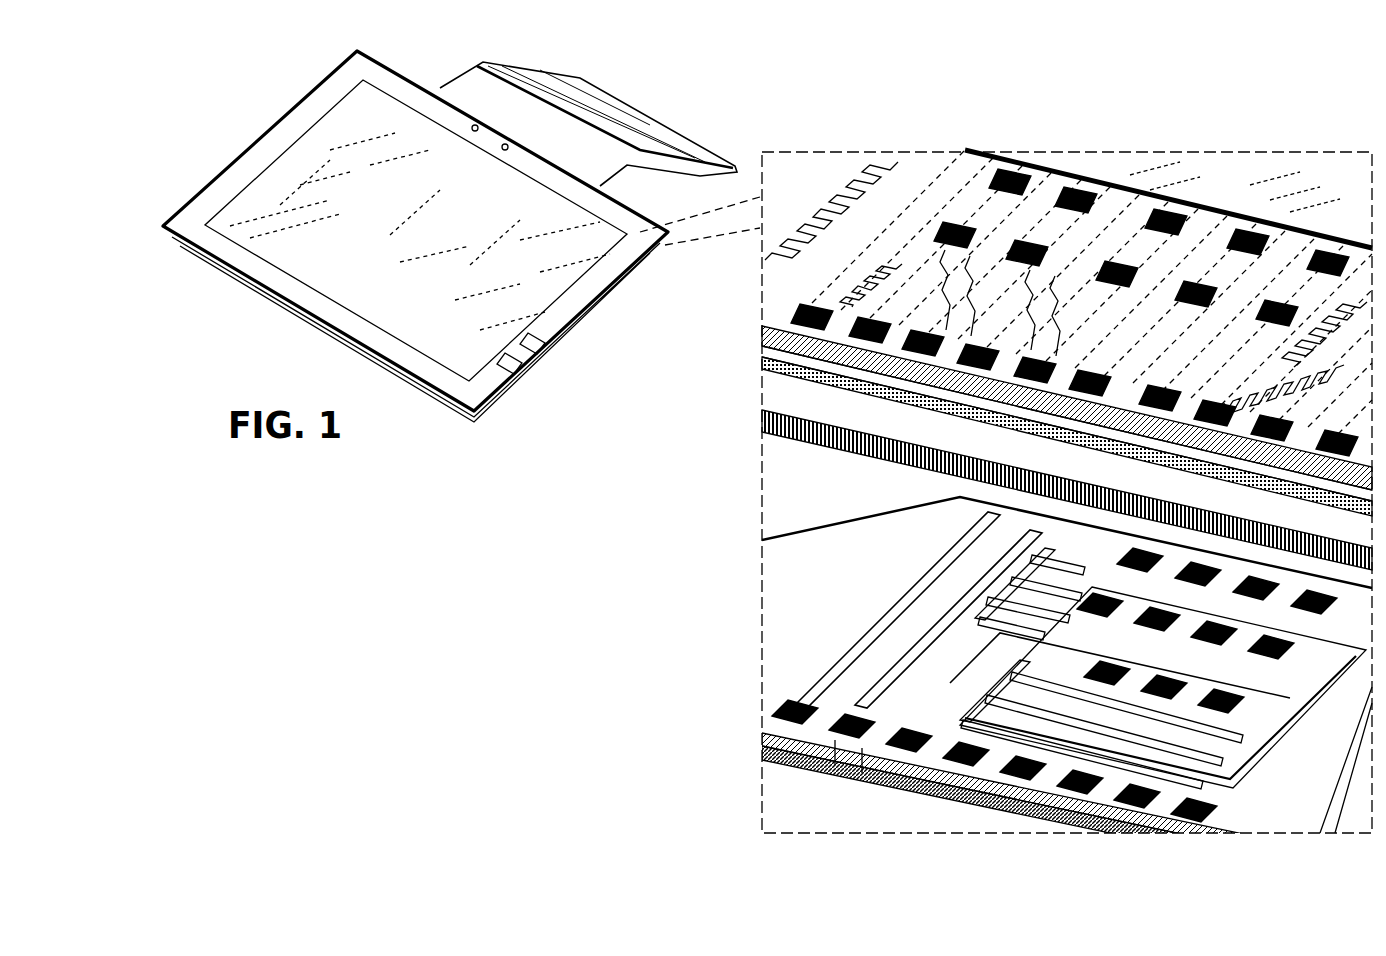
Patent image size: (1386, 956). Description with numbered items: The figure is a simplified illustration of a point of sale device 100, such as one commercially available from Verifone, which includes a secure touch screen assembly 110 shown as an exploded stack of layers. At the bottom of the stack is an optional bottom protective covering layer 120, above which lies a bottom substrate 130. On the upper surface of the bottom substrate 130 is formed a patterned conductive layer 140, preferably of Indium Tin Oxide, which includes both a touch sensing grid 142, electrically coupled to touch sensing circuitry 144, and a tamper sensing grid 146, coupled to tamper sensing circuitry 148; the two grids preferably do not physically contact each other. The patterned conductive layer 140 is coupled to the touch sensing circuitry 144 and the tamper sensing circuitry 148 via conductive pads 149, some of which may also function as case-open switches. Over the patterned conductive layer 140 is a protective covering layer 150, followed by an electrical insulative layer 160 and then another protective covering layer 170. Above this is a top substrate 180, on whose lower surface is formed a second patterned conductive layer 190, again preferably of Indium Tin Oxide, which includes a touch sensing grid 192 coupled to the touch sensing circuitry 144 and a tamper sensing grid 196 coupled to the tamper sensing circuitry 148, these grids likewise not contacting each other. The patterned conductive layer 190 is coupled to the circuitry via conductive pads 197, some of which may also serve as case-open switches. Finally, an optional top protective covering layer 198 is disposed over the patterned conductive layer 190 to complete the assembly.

The point of sale device 100 is at (299, 67).
The secure touch screen assembly 110 is at (1211, 136).
The bottom protective covering layer 120 is at (762, 753).
The bottom substrate 130 is at (762, 732).
The patterned conductive layer 140 is at (790, 712).
The touch sensing grid 142 is at (1247, 702).
The touch sensing circuitry 144 is at (512, 372).
The tamper sensing grid 146 is at (917, 588).
The tamper sensing circuitry 148 is at (552, 356).
The conductive pads 149 is at (840, 748).
The protective covering layer 150 is at (762, 538).
The electrical insulative layer 160 is at (762, 413).
The protective covering layer 170 is at (762, 358).
The top substrate 180 is at (762, 343).
The patterned conductive layer 190 is at (762, 326).
The touch sensing grid 192 is at (1163, 199).
The tamper sensing grid 196 is at (1312, 232).
The conductive pads 197 is at (790, 317).
The top protective covering layer 198 is at (958, 150).